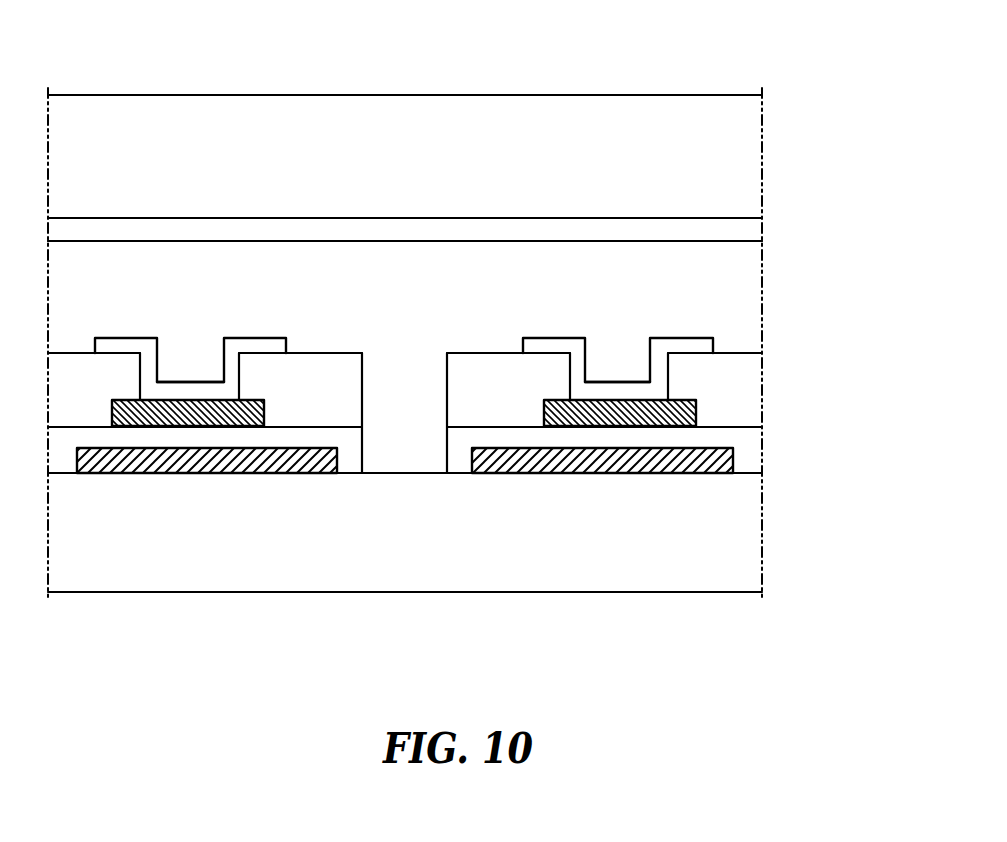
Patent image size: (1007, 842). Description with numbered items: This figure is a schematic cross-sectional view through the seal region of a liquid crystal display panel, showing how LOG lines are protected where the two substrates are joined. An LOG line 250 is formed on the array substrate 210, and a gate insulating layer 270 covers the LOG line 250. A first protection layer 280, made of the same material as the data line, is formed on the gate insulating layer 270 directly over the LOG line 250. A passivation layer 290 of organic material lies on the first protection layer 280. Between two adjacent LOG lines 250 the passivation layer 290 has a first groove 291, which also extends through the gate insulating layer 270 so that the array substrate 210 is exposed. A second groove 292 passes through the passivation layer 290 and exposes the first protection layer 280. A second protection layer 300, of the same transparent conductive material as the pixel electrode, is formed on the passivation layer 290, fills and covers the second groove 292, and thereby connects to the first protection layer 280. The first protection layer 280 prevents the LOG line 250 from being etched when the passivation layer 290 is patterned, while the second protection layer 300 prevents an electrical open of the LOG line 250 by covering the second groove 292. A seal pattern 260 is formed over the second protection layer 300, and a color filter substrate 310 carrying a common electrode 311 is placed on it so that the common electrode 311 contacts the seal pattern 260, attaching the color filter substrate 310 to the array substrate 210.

The array substrate 210 is at (393, 555).
The LOG line 250 is at (297, 467).
The seal pattern 260 is at (732, 265).
The gate insulating layer 270 is at (97, 437).
The first protection layer 280 is at (187, 416).
The passivation layer 290 is at (83, 400).
The first groove 291 is at (409, 421).
The second groove 292 is at (200, 364).
The second protection layer 300 is at (247, 348).
The color filter substrate 310 is at (635, 153).
The common electrode 311 is at (312, 227).